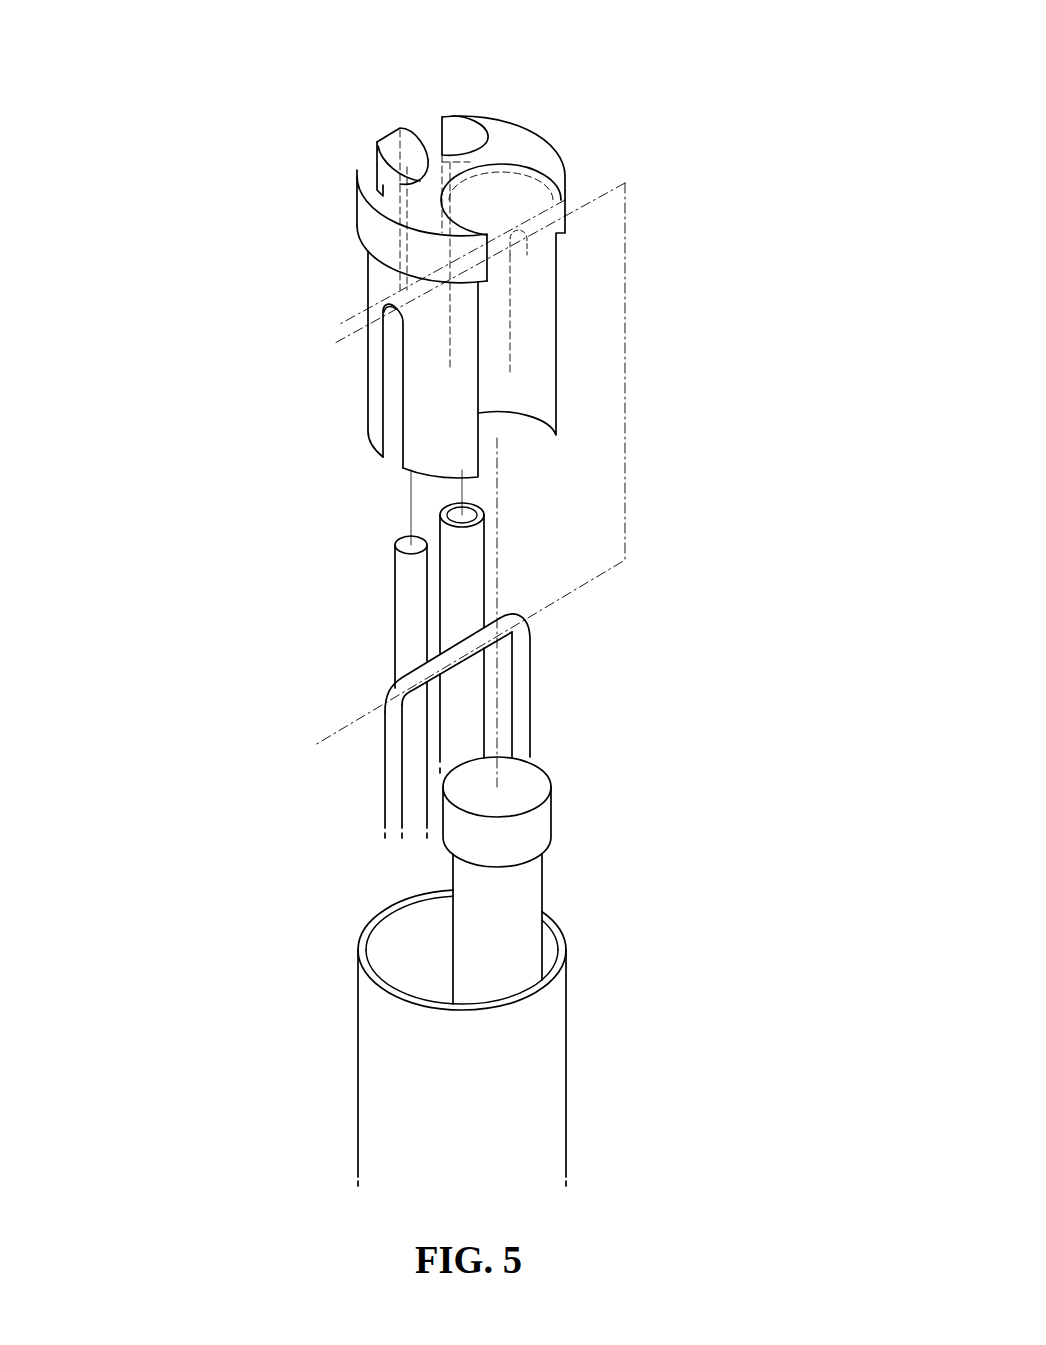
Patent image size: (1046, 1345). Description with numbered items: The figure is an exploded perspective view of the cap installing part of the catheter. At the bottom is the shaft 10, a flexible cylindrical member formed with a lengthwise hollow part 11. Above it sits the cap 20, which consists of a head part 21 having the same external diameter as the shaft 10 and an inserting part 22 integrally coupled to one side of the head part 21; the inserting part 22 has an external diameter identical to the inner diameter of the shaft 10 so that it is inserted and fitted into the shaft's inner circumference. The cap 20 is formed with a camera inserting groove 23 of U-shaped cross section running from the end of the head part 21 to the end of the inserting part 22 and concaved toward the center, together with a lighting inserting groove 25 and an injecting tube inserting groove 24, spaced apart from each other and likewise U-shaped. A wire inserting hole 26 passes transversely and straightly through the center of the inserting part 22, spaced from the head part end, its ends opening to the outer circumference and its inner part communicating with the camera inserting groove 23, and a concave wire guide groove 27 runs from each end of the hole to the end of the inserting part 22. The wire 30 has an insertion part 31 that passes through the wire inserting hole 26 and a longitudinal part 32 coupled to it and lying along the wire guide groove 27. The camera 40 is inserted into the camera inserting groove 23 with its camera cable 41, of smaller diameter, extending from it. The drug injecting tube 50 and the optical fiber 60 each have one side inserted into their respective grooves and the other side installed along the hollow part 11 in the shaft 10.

The shaft 10 is at (463, 1013).
The hollow part 11 is at (433, 947).
The cap 20 is at (611, 153).
The head part 21 is at (566, 208).
The inserting part 22 is at (557, 321).
The camera inserting groove 23 is at (497, 195).
The injecting tube inserting groove 24 is at (432, 130).
The lighting inserting groove 25 is at (375, 160).
The wire inserting hole 26 is at (525, 243).
The wire guide groove 27 is at (392, 360).
The wire 30 is at (530, 716).
The insertion part 31 is at (468, 628).
The longitudinal part 32 is at (532, 711).
The camera 40 is at (521, 782).
The camera cable 41 is at (542, 880).
The drug injecting tube 50 is at (450, 536).
The optical fiber 60 is at (405, 601).